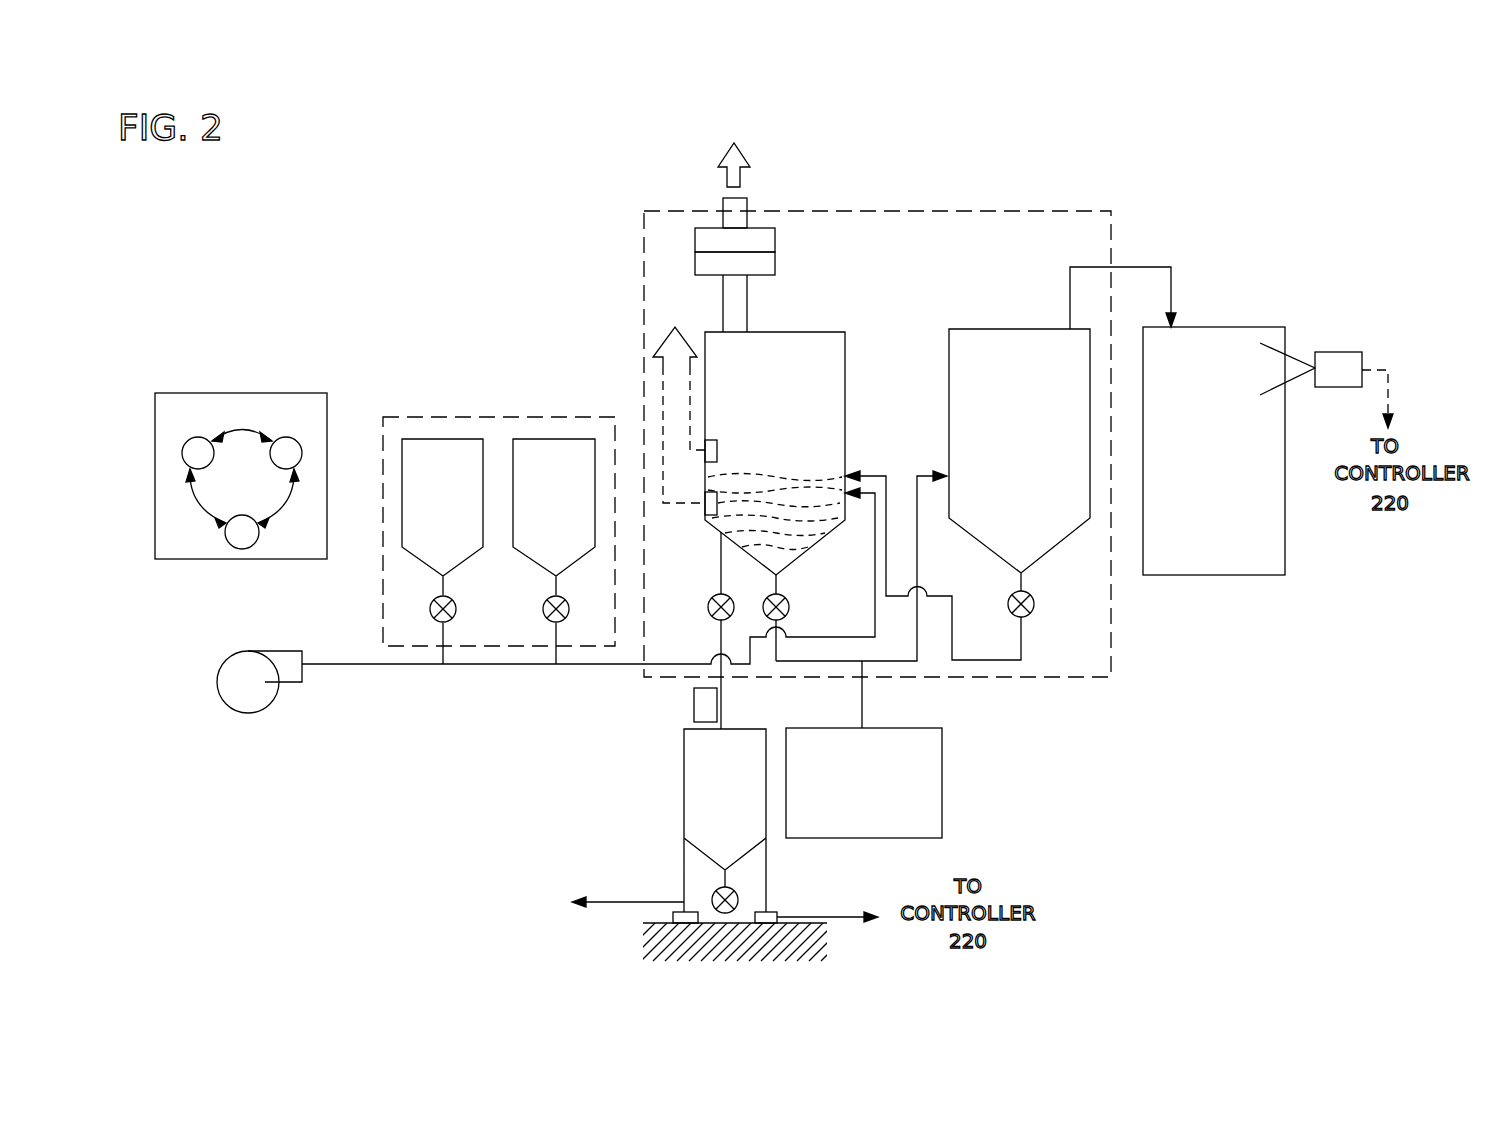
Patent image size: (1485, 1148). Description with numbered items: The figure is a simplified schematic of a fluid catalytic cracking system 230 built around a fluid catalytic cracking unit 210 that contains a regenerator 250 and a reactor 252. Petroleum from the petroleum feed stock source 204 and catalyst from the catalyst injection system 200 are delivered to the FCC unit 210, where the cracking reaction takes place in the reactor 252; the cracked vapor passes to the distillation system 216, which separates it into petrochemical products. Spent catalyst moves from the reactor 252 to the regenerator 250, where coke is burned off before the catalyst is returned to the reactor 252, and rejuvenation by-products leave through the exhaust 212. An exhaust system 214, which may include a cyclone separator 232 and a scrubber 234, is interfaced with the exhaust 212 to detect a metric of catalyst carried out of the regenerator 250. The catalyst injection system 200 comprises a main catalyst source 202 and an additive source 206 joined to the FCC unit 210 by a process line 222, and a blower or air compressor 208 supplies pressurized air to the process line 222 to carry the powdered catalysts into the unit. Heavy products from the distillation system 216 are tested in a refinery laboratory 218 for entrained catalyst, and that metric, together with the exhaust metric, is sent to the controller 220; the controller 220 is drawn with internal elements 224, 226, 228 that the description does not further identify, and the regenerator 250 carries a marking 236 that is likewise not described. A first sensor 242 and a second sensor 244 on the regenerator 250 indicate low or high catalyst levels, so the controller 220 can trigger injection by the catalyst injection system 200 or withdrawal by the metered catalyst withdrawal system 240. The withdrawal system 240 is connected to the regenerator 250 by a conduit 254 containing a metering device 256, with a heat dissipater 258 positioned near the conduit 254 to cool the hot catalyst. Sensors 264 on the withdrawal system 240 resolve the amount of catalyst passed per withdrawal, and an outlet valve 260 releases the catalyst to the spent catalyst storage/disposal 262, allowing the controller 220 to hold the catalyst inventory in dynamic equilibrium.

The catalyst injection system 200 is at (445, 415).
The main catalyst source 202 is at (442, 551).
The petroleum feed stock source 204 is at (864, 783).
The additive source 206 is at (554, 551).
The blower or air compressor 208 is at (233, 657).
The fluid catalytic cracking unit 210 is at (1003, 202).
The exhaust 212 is at (741, 317).
The exhaust system 214 is at (790, 224).
The distillation system 216 is at (1214, 451).
The refinery laboratory 218 is at (1340, 352).
The controller 220 is at (237, 393).
The process line 222 is at (520, 666).
The controller component 224 is at (182, 451).
The controller component 226 is at (250, 548).
The controller component 228 is at (302, 451).
The fluid catalytic cracking system 230 is at (1232, 234).
The cyclone separator 232 is at (776, 262).
The scrubber 234 is at (776, 237).
The catalyst bed 236 is at (818, 487).
The metered catalyst withdrawal system 240 is at (725, 820).
The first sensor 242 is at (720, 500).
The second sensor 244 is at (720, 450).
The regenerator 250 is at (806, 453).
The reactor 252 is at (1010, 463).
The conduit 254 is at (716, 636).
The metering device 256 is at (712, 597).
The heat dissipater 258 is at (694, 702).
The outlet valve 260 is at (738, 892).
The spent catalyst storage/disposal 262 is at (558, 878).
The sensors 264 is at (770, 912).